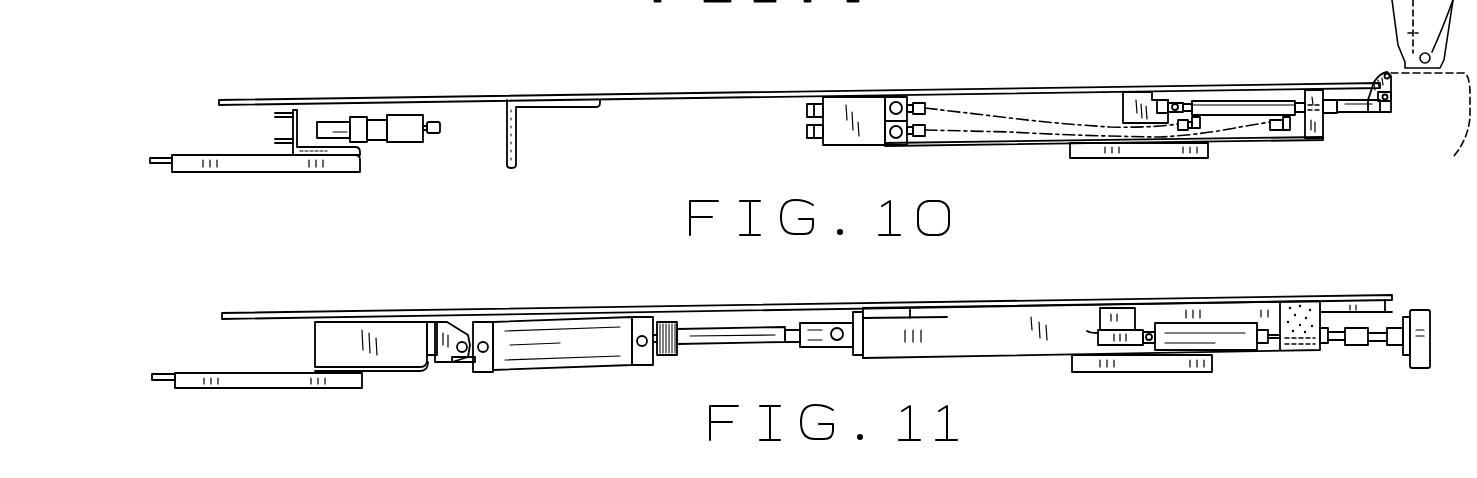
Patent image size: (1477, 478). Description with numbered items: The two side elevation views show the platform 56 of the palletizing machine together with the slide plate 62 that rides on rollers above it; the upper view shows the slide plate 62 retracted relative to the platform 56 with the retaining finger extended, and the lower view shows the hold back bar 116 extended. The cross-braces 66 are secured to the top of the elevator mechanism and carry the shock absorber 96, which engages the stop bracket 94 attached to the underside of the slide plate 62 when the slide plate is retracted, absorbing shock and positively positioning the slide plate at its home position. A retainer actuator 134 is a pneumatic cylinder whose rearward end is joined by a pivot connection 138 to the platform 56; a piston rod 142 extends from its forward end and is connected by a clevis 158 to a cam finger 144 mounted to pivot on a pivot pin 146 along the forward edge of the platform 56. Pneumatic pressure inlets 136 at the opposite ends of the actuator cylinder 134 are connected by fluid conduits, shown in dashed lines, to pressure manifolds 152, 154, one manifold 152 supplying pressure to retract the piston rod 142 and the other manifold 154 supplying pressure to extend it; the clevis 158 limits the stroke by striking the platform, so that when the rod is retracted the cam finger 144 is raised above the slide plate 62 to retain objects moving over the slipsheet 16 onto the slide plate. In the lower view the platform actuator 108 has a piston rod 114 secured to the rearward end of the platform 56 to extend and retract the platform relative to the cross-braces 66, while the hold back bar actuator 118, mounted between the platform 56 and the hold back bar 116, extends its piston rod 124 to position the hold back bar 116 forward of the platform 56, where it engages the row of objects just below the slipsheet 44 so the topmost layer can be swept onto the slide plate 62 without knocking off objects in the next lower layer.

In FIG. 10, the slipsheet 16 is at (1430, 93).
In FIG. 10, the slipsheet 44 is at (1430, 78).
In FIG. 10, the platform 56 is at (838, 137).
In FIG. 11, the platform 56 is at (1007, 342).
In FIG. 10, the slide plate 62 is at (997, 88).
In FIG. 10, the cross-brace 66 is at (197, 157).
In FIG. 11, the cross-brace 66 is at (228, 372).
In FIG. 10, the stop bracket 94 is at (515, 140).
In FIG. 10, the shock absorber 96 is at (407, 133).
In FIG. 11, the platform actuator 108 is at (567, 348).
In FIG. 11, the piston rod 114 is at (733, 340).
In FIG. 11, the hold back bar 116 is at (1422, 320).
In FIG. 11, the hold back bar actuator 118 is at (1243, 347).
In FIG. 11, the piston rod 124 is at (1273, 337).
In FIG. 10, the retainer actuator 134 is at (1253, 108).
In FIG. 10, the pneumatic pressure inlet 136 is at (1197, 130).
In FIG. 10, the pivot connection 138 is at (1153, 110).
In FIG. 10, the piston rod 142 is at (1355, 103).
In FIG. 10, the cam finger 144 is at (1380, 72).
In FIG. 10, the pivot pin 146 is at (1392, 95).
In FIG. 10, the pressure manifold 152 is at (900, 145).
In FIG. 10, the pressure manifold 154 is at (900, 93).
In FIG. 10, the clevis 158 is at (1328, 117).